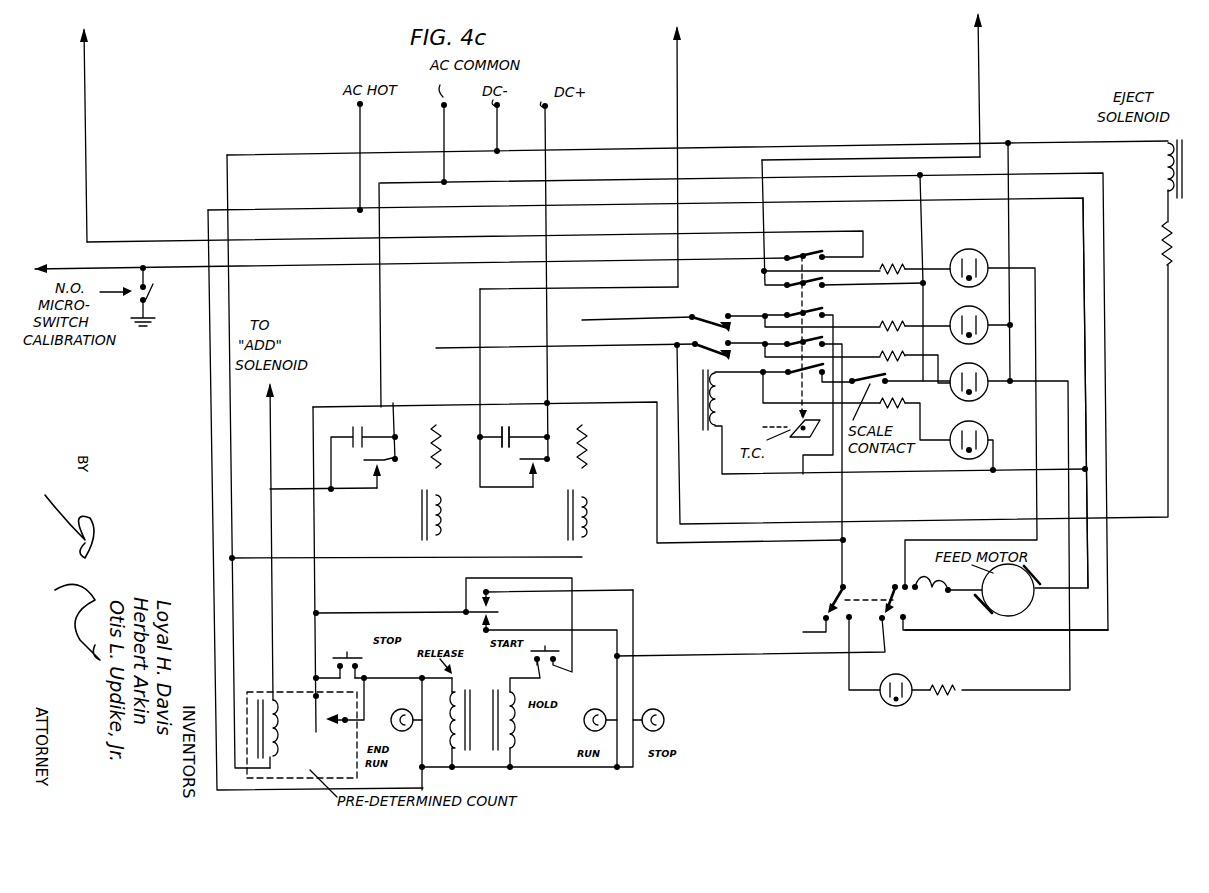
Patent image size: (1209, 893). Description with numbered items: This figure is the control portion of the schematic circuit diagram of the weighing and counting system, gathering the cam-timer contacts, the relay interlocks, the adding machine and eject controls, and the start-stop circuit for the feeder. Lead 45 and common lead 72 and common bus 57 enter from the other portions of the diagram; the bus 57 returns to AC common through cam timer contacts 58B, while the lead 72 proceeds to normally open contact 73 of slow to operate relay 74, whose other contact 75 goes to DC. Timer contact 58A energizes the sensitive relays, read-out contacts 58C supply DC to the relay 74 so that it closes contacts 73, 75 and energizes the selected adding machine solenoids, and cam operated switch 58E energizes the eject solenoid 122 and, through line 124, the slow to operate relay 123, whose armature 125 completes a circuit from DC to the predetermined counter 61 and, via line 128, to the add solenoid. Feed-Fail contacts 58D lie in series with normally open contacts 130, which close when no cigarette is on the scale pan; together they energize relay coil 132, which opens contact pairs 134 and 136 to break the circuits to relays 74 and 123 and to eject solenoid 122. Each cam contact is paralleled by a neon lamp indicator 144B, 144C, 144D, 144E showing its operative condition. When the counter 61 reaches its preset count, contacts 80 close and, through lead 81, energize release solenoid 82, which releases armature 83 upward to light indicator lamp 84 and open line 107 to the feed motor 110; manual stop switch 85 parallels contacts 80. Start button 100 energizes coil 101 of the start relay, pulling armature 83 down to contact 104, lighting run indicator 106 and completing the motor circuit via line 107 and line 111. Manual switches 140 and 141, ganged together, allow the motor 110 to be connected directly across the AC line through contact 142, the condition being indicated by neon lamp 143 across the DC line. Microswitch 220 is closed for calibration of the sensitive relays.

The connection lead to power source 45 is at (86, 92).
The common lead 72 is at (679, 84).
The common bus 57 is at (982, 78).
The microswitch 220 is at (152, 293).
The lead 81 is at (380, 367).
The line 128 is at (272, 408).
The armature 125 is at (390, 474).
The slow to operate relay 123 is at (445, 508).
The slow to operate relay 74 is at (550, 525).
The contact 75 is at (540, 457).
The normally open contact 73 is at (527, 480).
The line 124 is at (632, 348).
The contact pair 136 is at (691, 338).
The contact pair 134 is at (727, 314).
The timer contact 58A is at (795, 249).
The cam timer contacts 58B is at (828, 289).
The read-out contacts 58C is at (832, 313).
The Feed-Fail contacts 58D is at (806, 373).
The cam operated switch 58E is at (832, 343).
The contacts 130 is at (888, 384).
The relay coil 132 is at (710, 424).
The neon lamp indicator 144B is at (982, 231).
The neon lamp indicator 144C is at (978, 310).
The neon lamp indicator 144E is at (980, 368).
The neon lamp indicator 144D is at (964, 458).
The neon lamp 143 is at (907, 704).
The eject solenoid 122 is at (1161, 164).
The line 111 is at (1088, 452).
The feed motor 110 is at (1018, 608).
The contact 142 is at (908, 617).
The manual switch 140 is at (842, 623).
The manual switch 141 is at (888, 621).
The line 107 is at (777, 654).
The indicator lamp 84 is at (660, 707).
The manual stop switch 85 is at (359, 665).
The contacts 80 is at (337, 732).
The predetermined counter 61 is at (306, 762).
The release solenoid 82 is at (462, 694).
The coil of start relay 101 is at (513, 727).
The run indicator 106 is at (584, 720).
The start button 100 is at (545, 668).
The contact 104 is at (480, 623).
The armature 83 is at (500, 612).